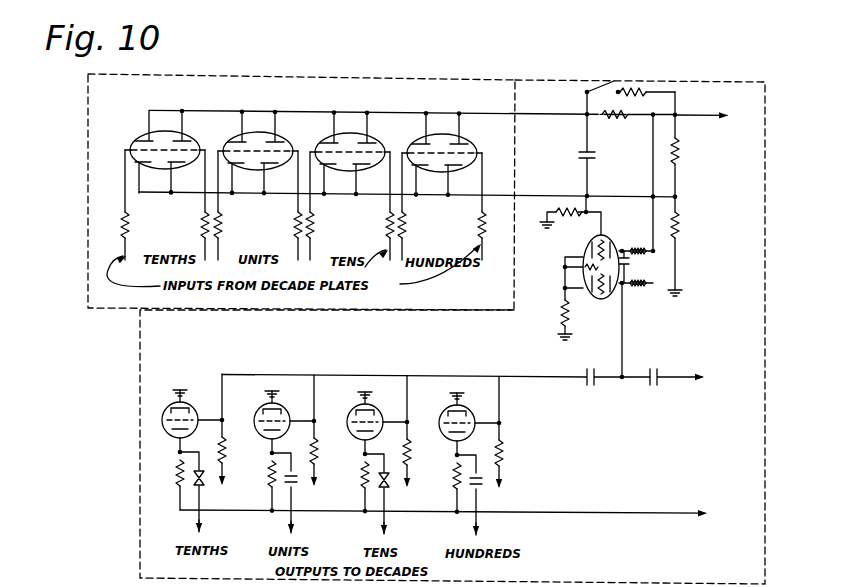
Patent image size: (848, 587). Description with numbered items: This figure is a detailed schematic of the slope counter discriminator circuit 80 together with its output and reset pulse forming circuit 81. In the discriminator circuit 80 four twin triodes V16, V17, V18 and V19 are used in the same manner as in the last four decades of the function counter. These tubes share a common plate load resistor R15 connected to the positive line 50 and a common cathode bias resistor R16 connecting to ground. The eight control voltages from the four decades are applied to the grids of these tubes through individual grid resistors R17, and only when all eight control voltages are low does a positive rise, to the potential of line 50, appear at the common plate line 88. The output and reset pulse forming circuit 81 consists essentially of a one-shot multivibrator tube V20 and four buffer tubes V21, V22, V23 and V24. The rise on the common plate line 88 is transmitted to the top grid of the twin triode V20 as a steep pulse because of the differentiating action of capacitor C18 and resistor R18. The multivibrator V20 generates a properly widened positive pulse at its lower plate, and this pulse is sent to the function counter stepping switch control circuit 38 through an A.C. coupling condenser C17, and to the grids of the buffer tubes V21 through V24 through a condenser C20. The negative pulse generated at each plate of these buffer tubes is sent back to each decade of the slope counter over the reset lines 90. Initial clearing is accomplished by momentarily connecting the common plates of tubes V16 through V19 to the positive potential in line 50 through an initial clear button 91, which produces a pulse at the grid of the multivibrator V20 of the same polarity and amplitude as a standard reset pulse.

The slope counter discriminator circuit 80 is at (86, 306).
The output and reset pulse forming circuit 81 is at (138, 478).
The common plate line 88 is at (298, 112).
The initial clear button 91 is at (592, 72).
The positive line 50 is at (695, 107).
The reset lines 90 is at (200, 520).
The function counter stepping switch control circuit 38 is at (720, 400).
The twin triode V16 is at (169, 184).
The twin triode V17 is at (262, 184).
The twin triode V18 is at (354, 185).
The twin triode V19 is at (446, 185).
The one-shot multivibrator tube V20 is at (606, 276).
The buffer tube V21 is at (196, 453).
The buffer tube V22 is at (288, 454).
The buffer tube V23 is at (381, 455).
The buffer tube V24 is at (473, 456).
The common plate load resistor R15 is at (611, 130).
The common cathode bias resistor R16 is at (675, 235).
The grid resistors R17 is at (303, 226).
The resistor R18 is at (559, 228).
The A.C. coupling condenser C17 is at (652, 368).
The capacitor C18 is at (597, 160).
The condenser C20 is at (576, 387).